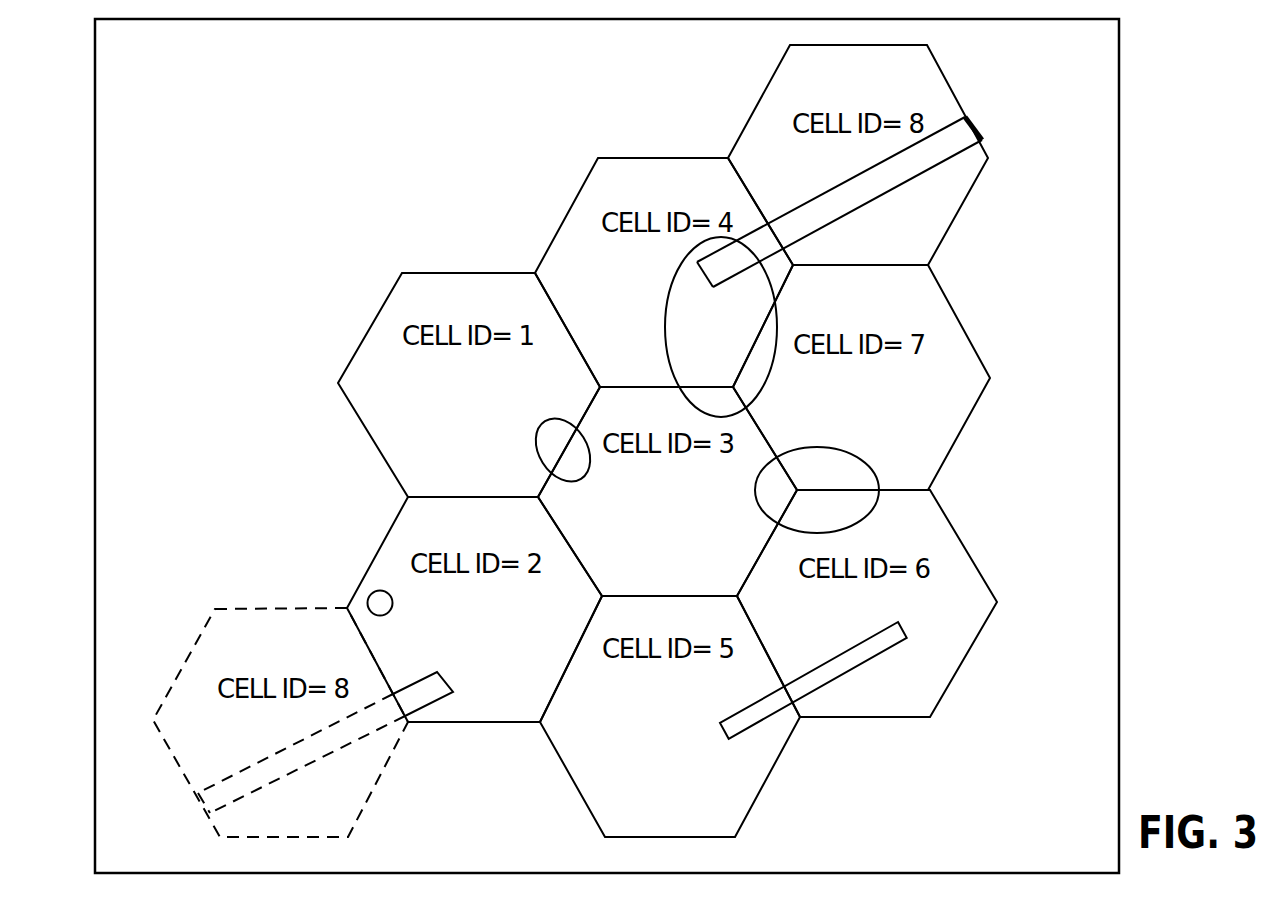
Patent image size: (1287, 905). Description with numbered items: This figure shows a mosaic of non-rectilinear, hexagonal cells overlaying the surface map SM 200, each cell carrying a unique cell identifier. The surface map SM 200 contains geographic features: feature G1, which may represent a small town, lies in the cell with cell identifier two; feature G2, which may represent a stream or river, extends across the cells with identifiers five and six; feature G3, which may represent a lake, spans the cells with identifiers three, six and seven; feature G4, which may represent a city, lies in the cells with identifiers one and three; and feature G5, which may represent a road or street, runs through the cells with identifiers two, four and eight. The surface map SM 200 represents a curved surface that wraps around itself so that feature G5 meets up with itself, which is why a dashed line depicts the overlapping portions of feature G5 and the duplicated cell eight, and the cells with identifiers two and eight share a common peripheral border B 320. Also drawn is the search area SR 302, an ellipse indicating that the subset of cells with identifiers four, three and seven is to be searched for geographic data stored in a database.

The surface map SM 200 is at (1125, 572).
The search area SR 302 is at (668, 310).
The common peripheral border B 320 is at (363, 637).
The geographic feature G1 is at (372, 587).
The geographic feature G2 is at (907, 635).
The geographic feature G3 is at (860, 462).
The geographic feature G4 is at (540, 432).
The geographic feature G5 is at (908, 180).